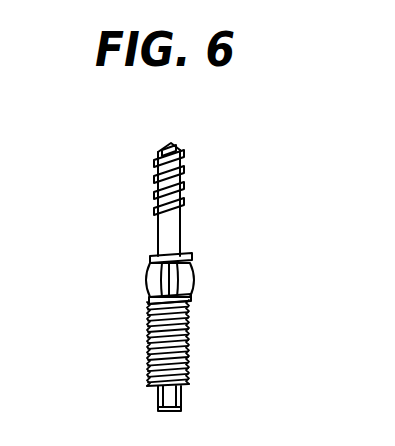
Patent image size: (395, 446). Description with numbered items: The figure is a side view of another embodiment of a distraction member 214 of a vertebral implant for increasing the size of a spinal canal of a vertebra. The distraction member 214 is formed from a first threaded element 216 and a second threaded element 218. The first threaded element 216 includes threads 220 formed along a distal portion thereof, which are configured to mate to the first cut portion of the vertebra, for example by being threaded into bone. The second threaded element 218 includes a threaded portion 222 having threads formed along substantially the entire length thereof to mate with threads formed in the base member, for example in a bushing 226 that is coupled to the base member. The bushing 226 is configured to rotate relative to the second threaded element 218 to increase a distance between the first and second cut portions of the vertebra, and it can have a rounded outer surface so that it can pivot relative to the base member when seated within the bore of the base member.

The distraction member 214 is at (256, 110).
The first threaded element 216 is at (205, 198).
The second threaded element 218 is at (205, 347).
The threads 220 is at (155, 173).
The threaded portion 222 is at (150, 340).
The bushing 226 is at (143, 281).